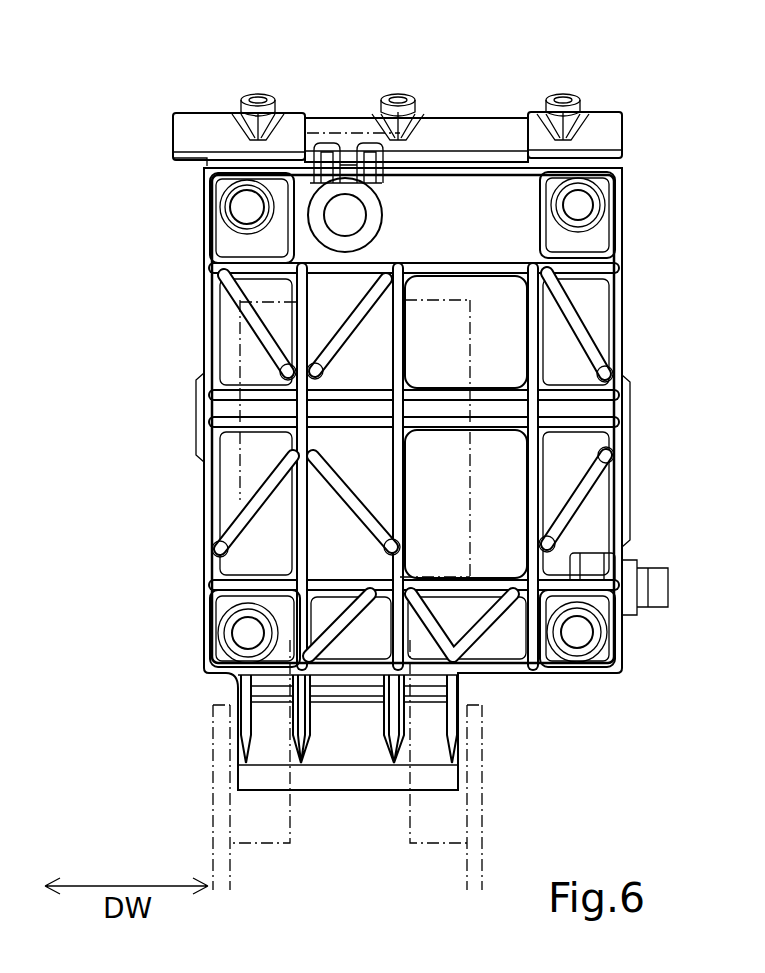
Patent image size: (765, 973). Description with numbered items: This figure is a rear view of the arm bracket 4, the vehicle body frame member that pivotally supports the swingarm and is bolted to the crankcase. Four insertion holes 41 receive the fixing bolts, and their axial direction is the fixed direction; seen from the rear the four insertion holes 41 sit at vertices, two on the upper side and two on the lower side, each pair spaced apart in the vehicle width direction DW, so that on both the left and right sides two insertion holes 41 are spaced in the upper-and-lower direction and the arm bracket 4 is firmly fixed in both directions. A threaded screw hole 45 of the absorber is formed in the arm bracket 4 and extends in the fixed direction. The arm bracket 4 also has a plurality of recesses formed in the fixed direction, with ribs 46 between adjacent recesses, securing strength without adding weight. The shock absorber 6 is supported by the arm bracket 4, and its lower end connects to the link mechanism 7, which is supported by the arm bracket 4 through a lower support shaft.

The arm bracket 4 is at (455, 100).
The threaded screw hole of the absorber 45 is at (345, 215).
The insertion hole 41 is at (244, 208).
The shock absorber 6 is at (441, 298).
The rib 46 is at (553, 323).
The link mechanism 7 is at (517, 824).